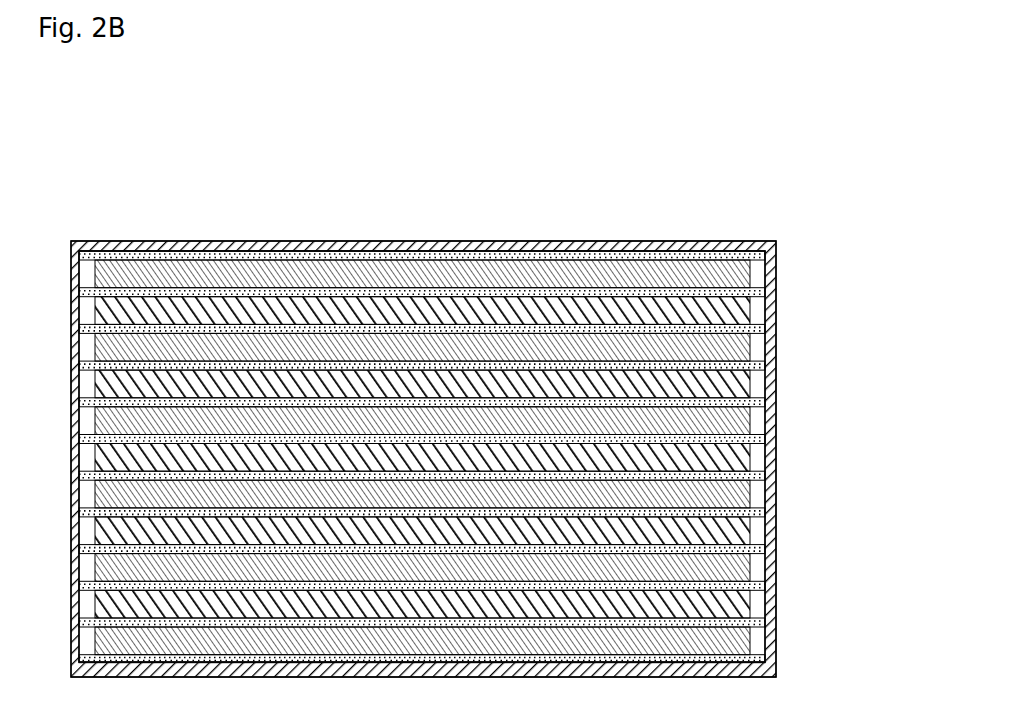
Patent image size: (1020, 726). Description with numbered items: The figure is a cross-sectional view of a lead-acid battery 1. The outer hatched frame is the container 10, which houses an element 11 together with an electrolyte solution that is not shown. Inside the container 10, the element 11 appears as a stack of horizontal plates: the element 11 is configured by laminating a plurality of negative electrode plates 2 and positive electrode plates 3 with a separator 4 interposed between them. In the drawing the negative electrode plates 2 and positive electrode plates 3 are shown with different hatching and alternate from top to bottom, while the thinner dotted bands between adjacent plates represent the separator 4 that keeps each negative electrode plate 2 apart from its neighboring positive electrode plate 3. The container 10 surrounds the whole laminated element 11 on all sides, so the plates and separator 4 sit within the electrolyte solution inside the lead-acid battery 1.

The lead-acid battery 1 is at (849, 143).
The negative electrode plate 2 is at (762, 268).
The positive electrode plate 3 is at (773, 345).
The separator 4 is at (765, 290).
The container 10 is at (620, 243).
The element 11 is at (752, 380).